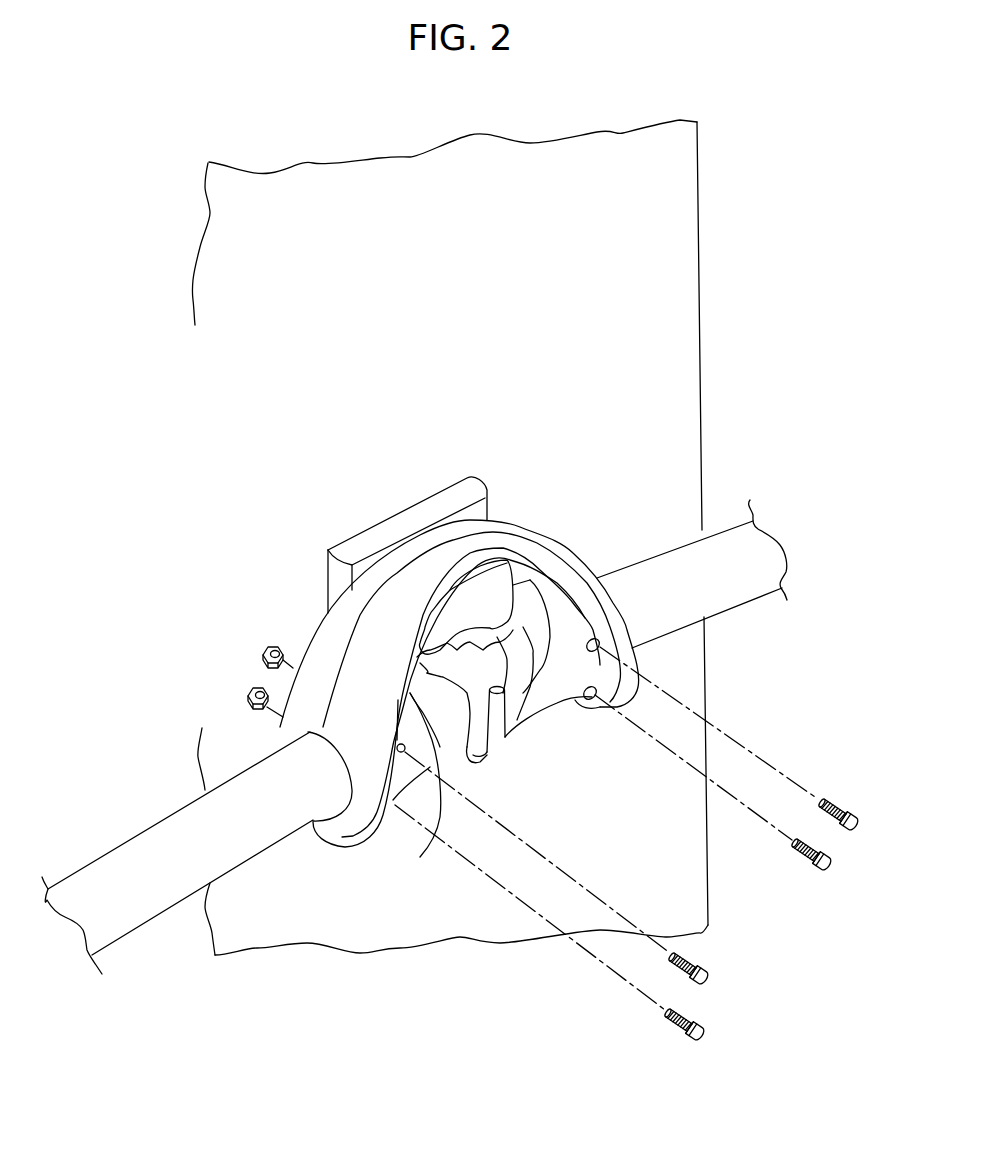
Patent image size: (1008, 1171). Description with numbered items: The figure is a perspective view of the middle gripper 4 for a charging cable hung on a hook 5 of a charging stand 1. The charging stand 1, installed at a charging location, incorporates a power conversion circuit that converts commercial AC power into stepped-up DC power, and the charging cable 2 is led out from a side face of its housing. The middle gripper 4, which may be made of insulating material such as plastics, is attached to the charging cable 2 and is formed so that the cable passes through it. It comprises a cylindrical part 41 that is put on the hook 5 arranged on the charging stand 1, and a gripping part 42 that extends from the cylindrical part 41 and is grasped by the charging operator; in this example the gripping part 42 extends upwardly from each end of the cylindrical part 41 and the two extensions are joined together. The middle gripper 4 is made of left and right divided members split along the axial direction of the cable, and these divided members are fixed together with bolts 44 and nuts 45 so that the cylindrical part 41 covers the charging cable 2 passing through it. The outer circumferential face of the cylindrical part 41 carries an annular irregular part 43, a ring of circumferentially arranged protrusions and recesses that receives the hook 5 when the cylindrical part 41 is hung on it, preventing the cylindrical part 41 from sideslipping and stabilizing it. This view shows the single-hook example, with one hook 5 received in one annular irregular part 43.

The charging stand 1 is at (707, 218).
The charging cable 2 is at (677, 577).
The middle gripper for a charging cable 4 is at (320, 620).
The cylindrical part 41 is at (525, 705).
The gripping part 42 is at (510, 527).
The annular irregular part 43 is at (436, 792).
The bolts 44 is at (853, 817).
The nuts 45 is at (247, 688).
The hook 5 is at (497, 753).